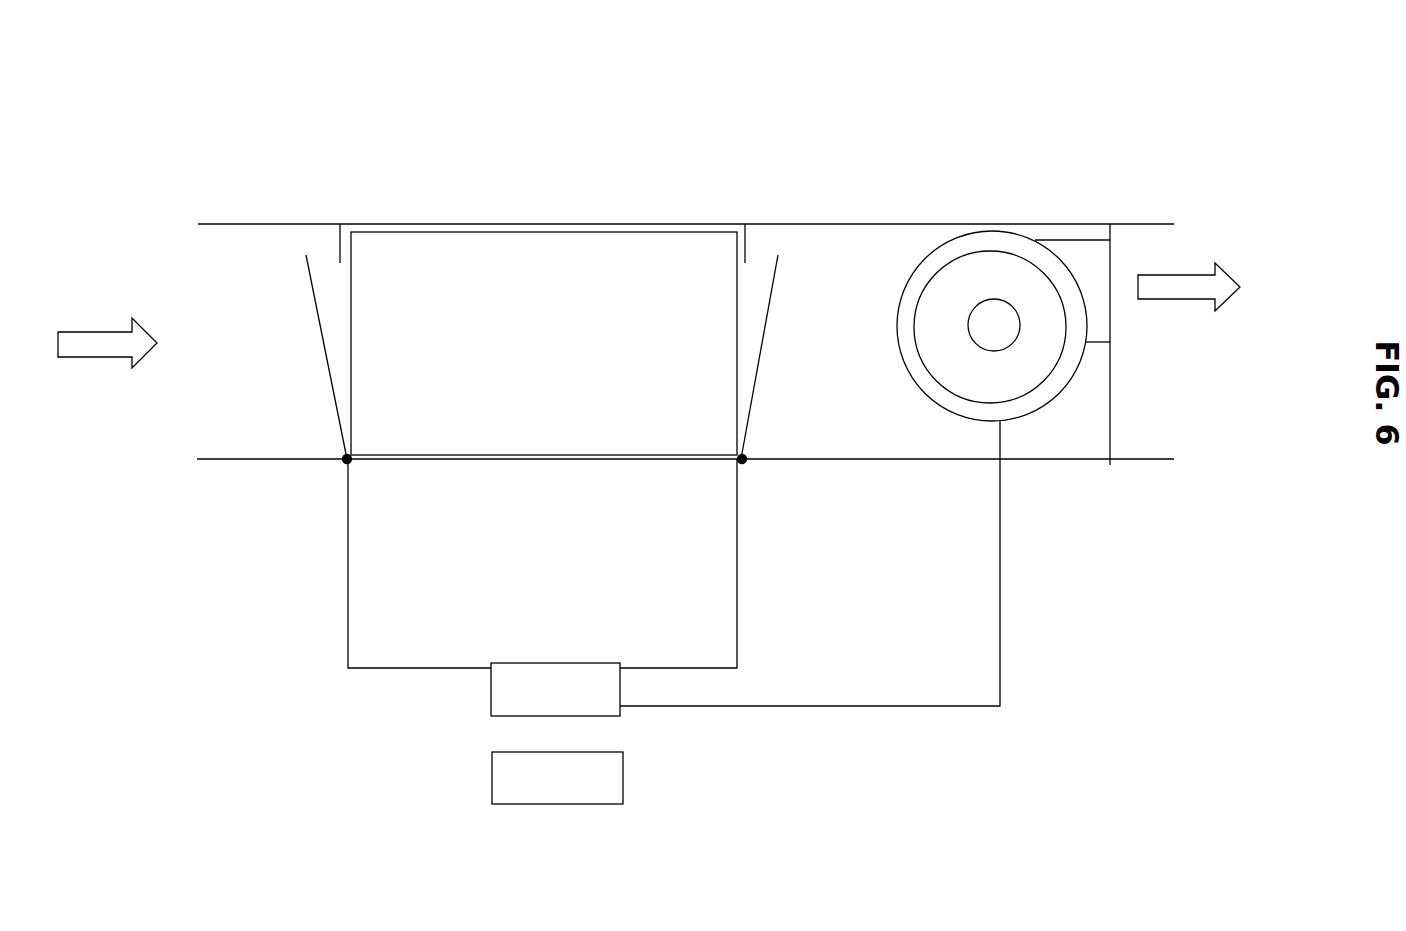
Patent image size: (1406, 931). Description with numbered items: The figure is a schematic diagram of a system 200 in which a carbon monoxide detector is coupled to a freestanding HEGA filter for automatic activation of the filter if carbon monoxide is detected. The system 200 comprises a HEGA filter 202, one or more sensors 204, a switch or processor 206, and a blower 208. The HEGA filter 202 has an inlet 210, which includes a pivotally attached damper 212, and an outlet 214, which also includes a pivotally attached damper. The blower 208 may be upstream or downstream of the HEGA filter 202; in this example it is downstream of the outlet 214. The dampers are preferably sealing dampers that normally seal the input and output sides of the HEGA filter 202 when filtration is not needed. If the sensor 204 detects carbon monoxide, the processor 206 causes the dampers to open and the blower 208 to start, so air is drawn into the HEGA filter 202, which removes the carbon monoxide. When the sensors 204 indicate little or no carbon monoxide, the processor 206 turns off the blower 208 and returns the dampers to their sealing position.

The system 200 is at (288, 107).
The HEGA filter 202 is at (502, 214).
The sensor 204 is at (557, 778).
The switch or processor 206 is at (674, 568).
The blower 208 is at (982, 256).
The inlet 210 is at (239, 473).
The damper 212 is at (304, 329).
The outlet 214 is at (1172, 210).